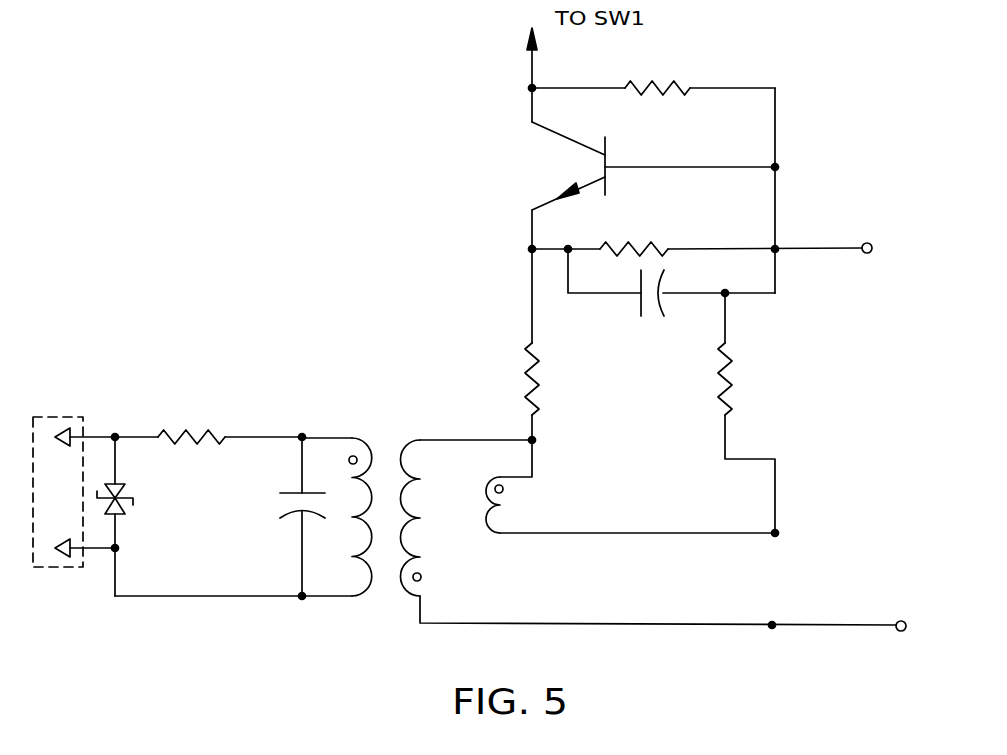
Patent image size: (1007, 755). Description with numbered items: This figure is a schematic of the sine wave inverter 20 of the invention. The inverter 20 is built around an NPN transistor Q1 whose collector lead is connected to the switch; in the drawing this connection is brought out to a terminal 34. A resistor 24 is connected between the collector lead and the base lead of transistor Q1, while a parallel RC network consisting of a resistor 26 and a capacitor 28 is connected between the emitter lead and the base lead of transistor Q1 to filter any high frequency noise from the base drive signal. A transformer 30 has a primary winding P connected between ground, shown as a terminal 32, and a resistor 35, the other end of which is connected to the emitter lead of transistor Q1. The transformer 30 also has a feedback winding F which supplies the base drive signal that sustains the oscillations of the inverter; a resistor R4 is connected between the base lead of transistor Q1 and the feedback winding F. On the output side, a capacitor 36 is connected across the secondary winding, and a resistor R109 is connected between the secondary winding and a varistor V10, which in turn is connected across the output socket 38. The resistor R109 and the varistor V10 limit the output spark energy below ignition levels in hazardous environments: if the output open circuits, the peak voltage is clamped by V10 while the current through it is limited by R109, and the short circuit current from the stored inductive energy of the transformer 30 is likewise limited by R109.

The sine wave inverter 20 is at (474, 262).
The resistor 24 is at (653, 83).
The NPN transistor Q1 is at (607, 143).
The resistor 26 is at (657, 243).
The capacitor 28 is at (660, 300).
The terminal 34 is at (865, 243).
The resistor 35 is at (538, 360).
The resistor R4 is at (729, 351).
The transformer 30 is at (599, 501).
The primary winding P is at (415, 598).
The feedback winding F is at (486, 528).
The terminal 32 is at (899, 620).
The socket 38 is at (46, 408).
The resistor R109 is at (191, 415).
The varistor V10 is at (144, 493).
The capacitor 36 is at (290, 513).